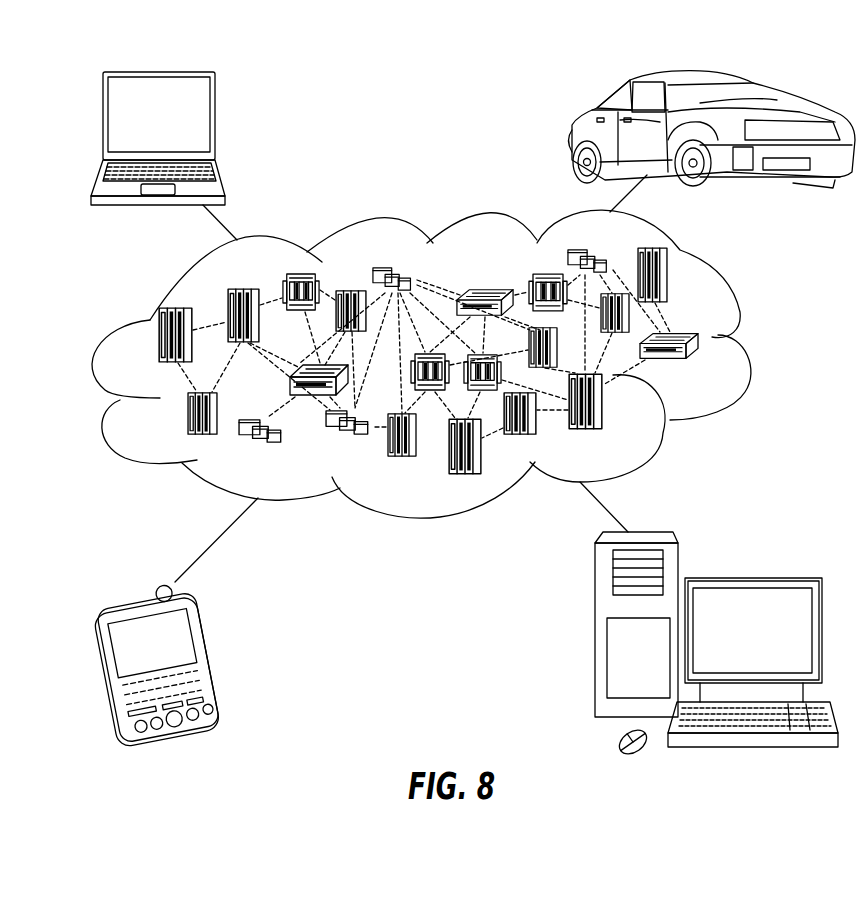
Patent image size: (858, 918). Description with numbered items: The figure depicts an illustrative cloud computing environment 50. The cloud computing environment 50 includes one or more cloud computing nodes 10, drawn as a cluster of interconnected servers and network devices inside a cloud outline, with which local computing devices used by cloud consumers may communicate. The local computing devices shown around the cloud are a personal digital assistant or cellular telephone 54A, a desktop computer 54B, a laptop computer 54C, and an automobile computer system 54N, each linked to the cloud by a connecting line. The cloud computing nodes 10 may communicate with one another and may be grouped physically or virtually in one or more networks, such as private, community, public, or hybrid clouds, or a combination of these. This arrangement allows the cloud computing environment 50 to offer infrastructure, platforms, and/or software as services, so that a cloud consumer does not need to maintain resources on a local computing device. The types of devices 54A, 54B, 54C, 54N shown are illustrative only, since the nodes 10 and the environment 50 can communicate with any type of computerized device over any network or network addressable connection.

The cloud computing nodes 10 is at (473, 361).
The cloud computing environment 50 is at (752, 343).
The personal digital assistant (PDA) or cellular telephone 54A is at (208, 653).
The desktop computer 54B is at (750, 578).
The laptop computer 54C is at (217, 122).
The automobile computer system 54N is at (572, 133).